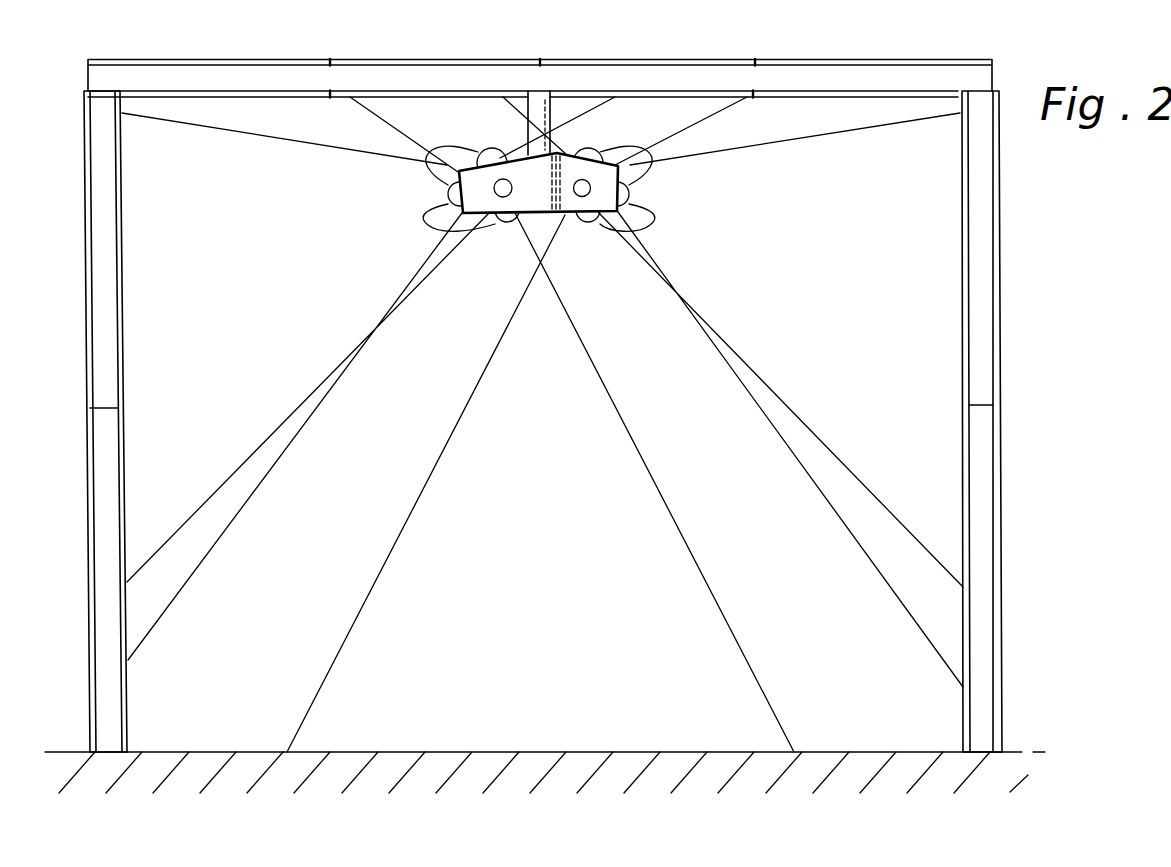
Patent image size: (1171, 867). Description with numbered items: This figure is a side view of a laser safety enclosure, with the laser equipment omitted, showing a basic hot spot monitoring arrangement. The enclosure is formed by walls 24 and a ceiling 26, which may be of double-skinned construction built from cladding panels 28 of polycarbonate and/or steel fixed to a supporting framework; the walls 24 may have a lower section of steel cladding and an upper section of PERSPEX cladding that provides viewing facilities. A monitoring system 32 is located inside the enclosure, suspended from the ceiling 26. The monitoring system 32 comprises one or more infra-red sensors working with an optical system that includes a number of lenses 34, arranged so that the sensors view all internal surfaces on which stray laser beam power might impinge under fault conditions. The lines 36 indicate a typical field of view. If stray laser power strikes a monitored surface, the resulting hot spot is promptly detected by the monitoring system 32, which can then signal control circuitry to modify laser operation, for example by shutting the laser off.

The walls 24 is at (138, 492).
The ceiling 26 is at (318, 98).
The cladding panels 28 is at (223, 97).
The monitoring system 32 is at (428, 228).
The lenses 34 is at (447, 190).
The field of view lines 36 is at (567, 312).